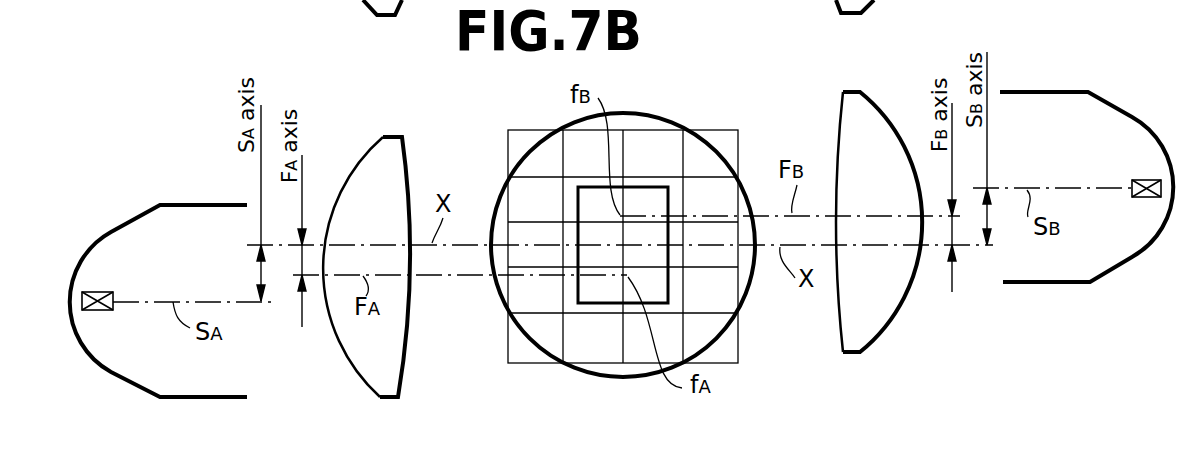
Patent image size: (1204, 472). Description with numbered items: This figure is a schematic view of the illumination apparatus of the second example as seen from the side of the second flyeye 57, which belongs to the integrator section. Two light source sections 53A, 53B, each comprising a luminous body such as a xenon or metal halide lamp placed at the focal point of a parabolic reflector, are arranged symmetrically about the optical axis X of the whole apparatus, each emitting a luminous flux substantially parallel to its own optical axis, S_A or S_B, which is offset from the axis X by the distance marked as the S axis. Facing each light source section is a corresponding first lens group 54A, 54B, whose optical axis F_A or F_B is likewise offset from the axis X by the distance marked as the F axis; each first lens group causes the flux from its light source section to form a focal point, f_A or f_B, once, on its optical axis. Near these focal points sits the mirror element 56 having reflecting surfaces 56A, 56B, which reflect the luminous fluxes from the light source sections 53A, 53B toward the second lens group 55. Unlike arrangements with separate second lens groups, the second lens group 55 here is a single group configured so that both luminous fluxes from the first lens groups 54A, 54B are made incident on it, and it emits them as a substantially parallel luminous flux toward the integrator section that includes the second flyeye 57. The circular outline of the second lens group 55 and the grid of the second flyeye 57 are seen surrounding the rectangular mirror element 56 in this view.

The light source section 53A is at (138, 200).
The first lens group 54A is at (388, 143).
The second lens group 55 is at (495, 290).
The mirror element 56 is at (650, 186).
The reflecting surface 56A is at (657, 280).
The reflecting surface 56B is at (590, 207).
The second flyeye 57 is at (722, 135).
The first lens group 54B is at (860, 113).
The light source section 53B is at (1070, 83).